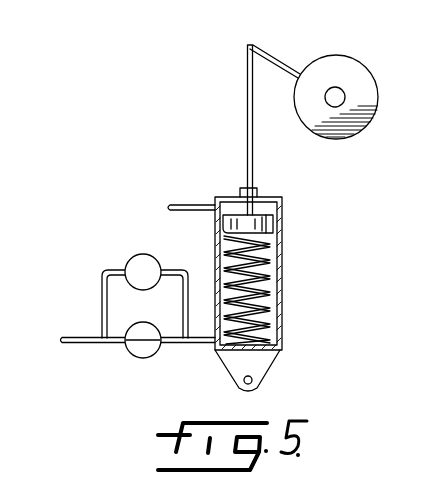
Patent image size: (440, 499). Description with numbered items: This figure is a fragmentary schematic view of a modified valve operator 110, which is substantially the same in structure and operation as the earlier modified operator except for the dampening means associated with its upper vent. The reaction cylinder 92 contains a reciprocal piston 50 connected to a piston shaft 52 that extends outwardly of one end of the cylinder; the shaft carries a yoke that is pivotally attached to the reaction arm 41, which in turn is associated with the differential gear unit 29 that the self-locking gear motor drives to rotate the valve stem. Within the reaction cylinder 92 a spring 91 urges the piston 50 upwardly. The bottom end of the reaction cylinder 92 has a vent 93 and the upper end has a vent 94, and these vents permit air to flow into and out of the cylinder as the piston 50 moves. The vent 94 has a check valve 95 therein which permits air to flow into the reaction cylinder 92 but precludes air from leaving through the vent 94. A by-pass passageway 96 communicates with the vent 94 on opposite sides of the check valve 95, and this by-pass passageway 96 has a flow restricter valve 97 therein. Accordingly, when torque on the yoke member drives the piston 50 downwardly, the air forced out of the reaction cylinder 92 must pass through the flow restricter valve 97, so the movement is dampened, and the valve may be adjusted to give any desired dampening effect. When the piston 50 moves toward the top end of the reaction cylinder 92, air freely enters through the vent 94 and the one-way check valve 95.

The differential gear unit 29 is at (376, 80).
The reaction arm 41 is at (268, 53).
The piston shaft 52 is at (247, 115).
The valve operator 110 is at (316, 174).
The vent 93 is at (186, 202).
The piston 50 is at (273, 222).
The reaction cylinder 92 is at (283, 278).
The spring 91 is at (268, 333).
The flow restricter valve 97 is at (136, 254).
The by-pass passageway 96 is at (100, 293).
The check valve 95 is at (140, 357).
The vent 94 is at (203, 348).